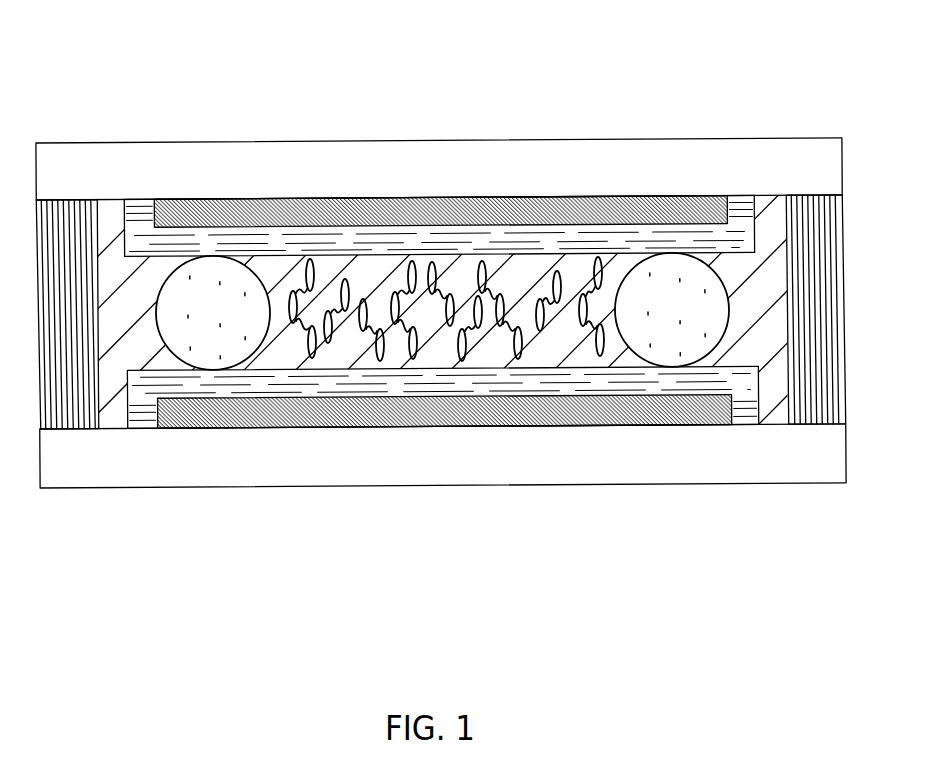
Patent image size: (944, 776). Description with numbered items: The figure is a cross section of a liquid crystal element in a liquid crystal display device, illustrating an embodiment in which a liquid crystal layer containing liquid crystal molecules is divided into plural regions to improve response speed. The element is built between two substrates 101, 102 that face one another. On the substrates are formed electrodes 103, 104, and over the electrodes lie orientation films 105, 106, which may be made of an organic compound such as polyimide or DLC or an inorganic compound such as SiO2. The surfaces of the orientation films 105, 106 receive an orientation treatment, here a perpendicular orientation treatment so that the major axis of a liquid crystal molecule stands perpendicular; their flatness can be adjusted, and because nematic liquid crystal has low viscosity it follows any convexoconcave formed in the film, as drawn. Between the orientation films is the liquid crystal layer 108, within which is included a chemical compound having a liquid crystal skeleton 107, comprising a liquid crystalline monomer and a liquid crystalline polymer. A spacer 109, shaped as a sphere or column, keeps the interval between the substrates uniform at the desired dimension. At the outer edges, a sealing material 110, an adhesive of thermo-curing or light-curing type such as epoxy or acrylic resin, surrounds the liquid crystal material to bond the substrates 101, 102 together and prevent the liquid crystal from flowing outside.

The substrate 101 is at (439, 130).
The substrate 102 is at (443, 489).
The electrode 103 is at (440, 142).
The electrode 104 is at (445, 477).
The orientation film 105 is at (439, 163).
The orientation film 106 is at (442, 465).
The chemical compound having a liquid crystal skeleton 107 is at (483, 209).
The liquid crystal layer 108 is at (472, 242).
The spacer 109 is at (419, 314).
The sealing material 110 is at (440, 381).